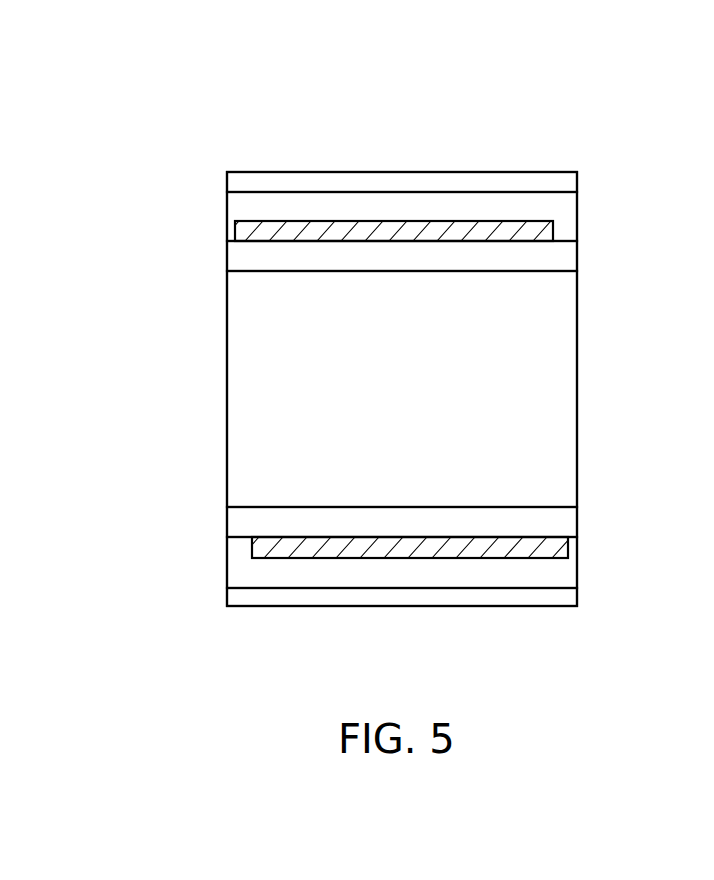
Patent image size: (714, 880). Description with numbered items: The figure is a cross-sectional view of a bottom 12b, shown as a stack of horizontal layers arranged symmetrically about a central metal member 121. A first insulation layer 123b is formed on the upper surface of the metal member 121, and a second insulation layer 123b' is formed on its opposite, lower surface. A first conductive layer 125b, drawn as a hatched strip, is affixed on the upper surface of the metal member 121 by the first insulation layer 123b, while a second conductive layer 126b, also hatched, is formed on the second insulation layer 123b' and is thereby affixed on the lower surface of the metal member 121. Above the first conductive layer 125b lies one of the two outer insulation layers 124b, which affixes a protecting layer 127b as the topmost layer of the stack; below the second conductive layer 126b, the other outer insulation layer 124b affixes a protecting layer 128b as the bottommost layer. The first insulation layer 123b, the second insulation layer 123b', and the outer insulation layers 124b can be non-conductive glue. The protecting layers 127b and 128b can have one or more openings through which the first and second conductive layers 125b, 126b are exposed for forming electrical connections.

The bottom 12b is at (199, 117).
The protecting layer 127b is at (555, 183).
The outer insulation layer 124b is at (555, 207).
The first conductive layer 125b is at (525, 228).
The first insulation layer 123b is at (454, 256).
The metal member 121 is at (555, 390).
The second insulation layer 123b' is at (457, 522).
The second conductive layer 126b is at (548, 544).
The protecting layer 128b is at (555, 600).